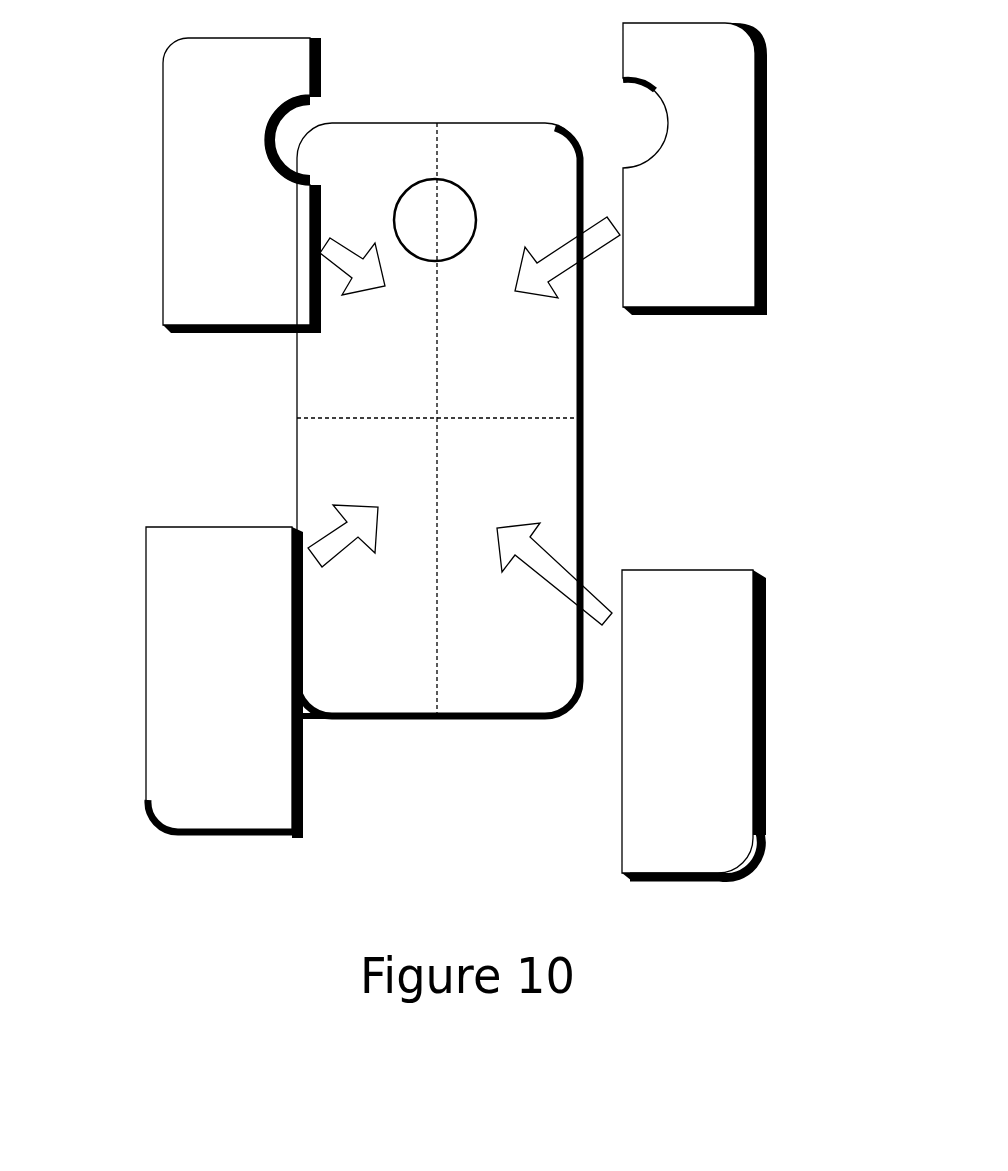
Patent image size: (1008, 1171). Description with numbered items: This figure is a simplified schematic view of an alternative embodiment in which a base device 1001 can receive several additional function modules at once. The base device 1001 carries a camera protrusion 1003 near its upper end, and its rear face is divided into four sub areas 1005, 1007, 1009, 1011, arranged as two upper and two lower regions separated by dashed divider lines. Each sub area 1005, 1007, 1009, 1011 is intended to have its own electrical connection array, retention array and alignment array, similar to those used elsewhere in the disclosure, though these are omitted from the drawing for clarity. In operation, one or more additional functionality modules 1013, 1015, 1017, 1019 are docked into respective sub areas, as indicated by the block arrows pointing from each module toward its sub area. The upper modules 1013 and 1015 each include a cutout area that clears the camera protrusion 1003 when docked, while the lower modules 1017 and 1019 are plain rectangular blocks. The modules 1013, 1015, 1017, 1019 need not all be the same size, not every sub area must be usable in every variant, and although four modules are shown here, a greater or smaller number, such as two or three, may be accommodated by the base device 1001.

The base device 1001 is at (374, 137).
The camera protrusion 1003 is at (440, 200).
The sub area 1005 is at (401, 400).
The sub area 1007 is at (534, 400).
The sub area 1009 is at (401, 702).
The sub area 1011 is at (532, 702).
The additional functionality module 1013 is at (187, 120).
The additional functionality module 1015 is at (737, 92).
The additional functionality module 1017 is at (177, 603).
The additional functionality module 1019 is at (735, 635).